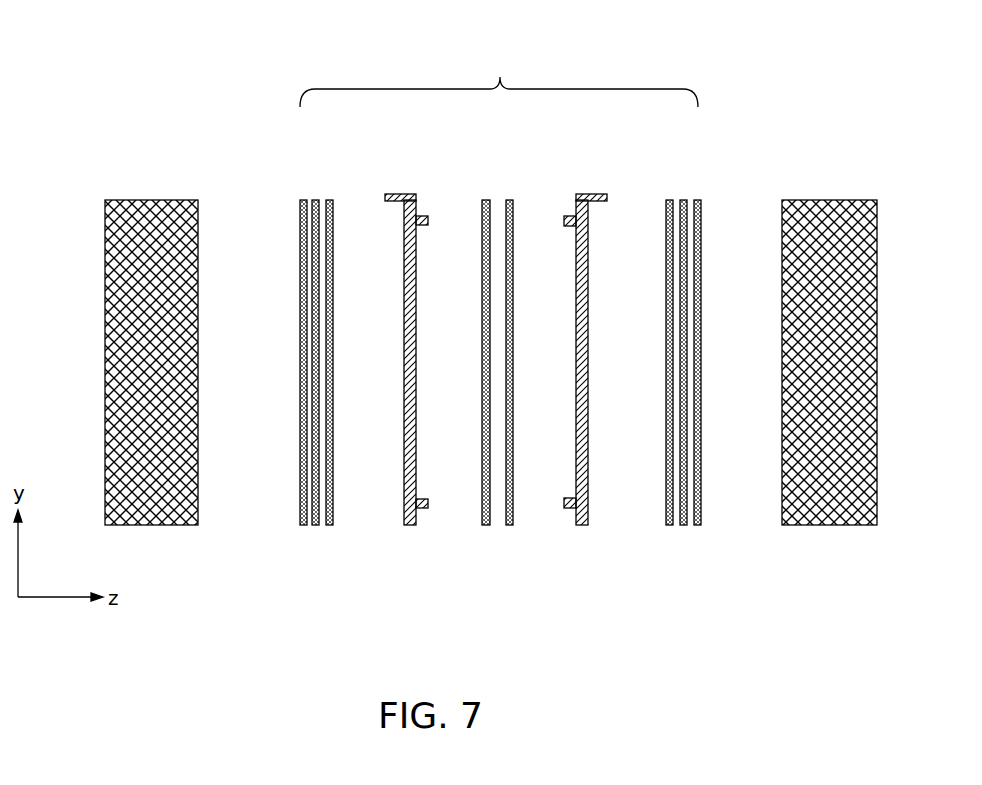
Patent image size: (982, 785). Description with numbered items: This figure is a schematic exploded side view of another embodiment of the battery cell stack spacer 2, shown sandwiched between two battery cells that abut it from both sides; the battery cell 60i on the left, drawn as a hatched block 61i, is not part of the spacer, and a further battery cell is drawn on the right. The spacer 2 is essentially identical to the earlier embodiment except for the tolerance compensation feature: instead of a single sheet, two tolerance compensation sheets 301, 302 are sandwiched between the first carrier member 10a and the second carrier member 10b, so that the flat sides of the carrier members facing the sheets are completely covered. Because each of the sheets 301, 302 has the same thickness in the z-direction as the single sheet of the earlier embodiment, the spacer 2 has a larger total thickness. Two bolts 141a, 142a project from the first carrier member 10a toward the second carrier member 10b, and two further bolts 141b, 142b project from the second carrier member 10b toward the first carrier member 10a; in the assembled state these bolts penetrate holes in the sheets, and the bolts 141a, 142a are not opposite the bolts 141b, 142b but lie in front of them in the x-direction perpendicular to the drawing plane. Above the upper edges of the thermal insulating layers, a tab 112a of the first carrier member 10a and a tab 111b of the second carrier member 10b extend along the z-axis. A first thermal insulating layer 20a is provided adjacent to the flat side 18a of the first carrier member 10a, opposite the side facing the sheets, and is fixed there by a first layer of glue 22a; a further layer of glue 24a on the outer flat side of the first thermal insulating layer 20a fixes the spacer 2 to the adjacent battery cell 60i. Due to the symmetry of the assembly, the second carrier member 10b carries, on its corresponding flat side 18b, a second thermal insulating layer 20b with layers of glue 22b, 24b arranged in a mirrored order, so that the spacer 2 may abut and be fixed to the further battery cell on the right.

The battery cell stack spacer 2 is at (500, 78).
The battery cell 60i is at (148, 318).
The electrode i 61i is at (198, 228).
The first thermal insulating layer 20a is at (324, 364).
The first layer of glue 22a is at (334, 232).
The further layer of glue 24a is at (303, 527).
The second thermal insulating layer 20b is at (640, 365).
The layer of glue 22b is at (665, 213).
The layer of glue 24b is at (697, 527).
The tolerance compensation sheet 301 is at (486, 199).
The tolerance compensation sheet 302 is at (509, 199).
The first carrier member 10a is at (412, 415).
The flat side 18a is at (412, 387).
The tab 112a is at (393, 202).
The bolt 142a is at (428, 222).
The bolt 141a is at (428, 505).
The second carrier member 10b is at (580, 415).
The support plate b 18b is at (580, 387).
The tab 111b is at (600, 202).
The bolt 142b is at (564, 222).
The bolt 141b is at (563, 503).